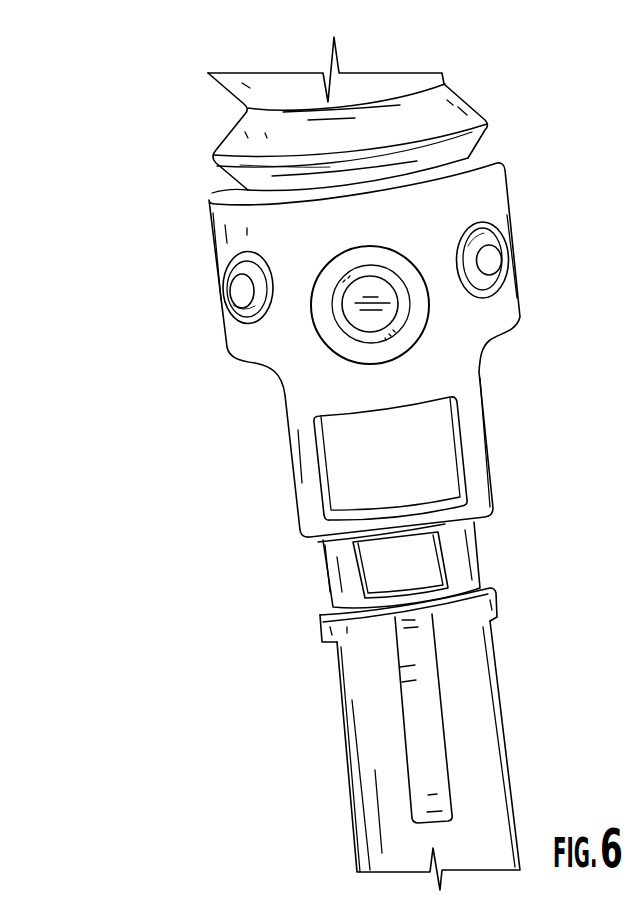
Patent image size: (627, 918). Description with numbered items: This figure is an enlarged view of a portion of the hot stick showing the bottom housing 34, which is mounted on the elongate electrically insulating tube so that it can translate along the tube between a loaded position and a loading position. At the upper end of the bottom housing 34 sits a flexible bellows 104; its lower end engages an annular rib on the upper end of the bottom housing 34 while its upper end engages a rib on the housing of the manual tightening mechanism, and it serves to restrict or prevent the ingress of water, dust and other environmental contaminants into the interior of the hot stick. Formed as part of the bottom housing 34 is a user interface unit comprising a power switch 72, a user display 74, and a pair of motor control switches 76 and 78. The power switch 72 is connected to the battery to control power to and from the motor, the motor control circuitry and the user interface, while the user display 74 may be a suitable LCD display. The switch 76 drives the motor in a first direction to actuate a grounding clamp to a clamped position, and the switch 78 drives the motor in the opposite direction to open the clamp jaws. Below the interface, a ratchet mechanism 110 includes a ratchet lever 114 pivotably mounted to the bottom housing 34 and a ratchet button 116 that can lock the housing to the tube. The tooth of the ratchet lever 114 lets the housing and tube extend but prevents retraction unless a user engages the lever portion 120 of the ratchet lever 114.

The flexible bellows 104 is at (217, 157).
The bottom housing 34 is at (498, 589).
The motor control switch 78 is at (238, 292).
The power switch 72 is at (417, 340).
The motor control switch 76 is at (505, 265).
The user display 74 is at (322, 510).
The ratchet button 116 is at (373, 570).
The ratchet mechanism 110 is at (368, 685).
The ratchet lever 114 is at (417, 712).
The lever portion 120 is at (423, 792).